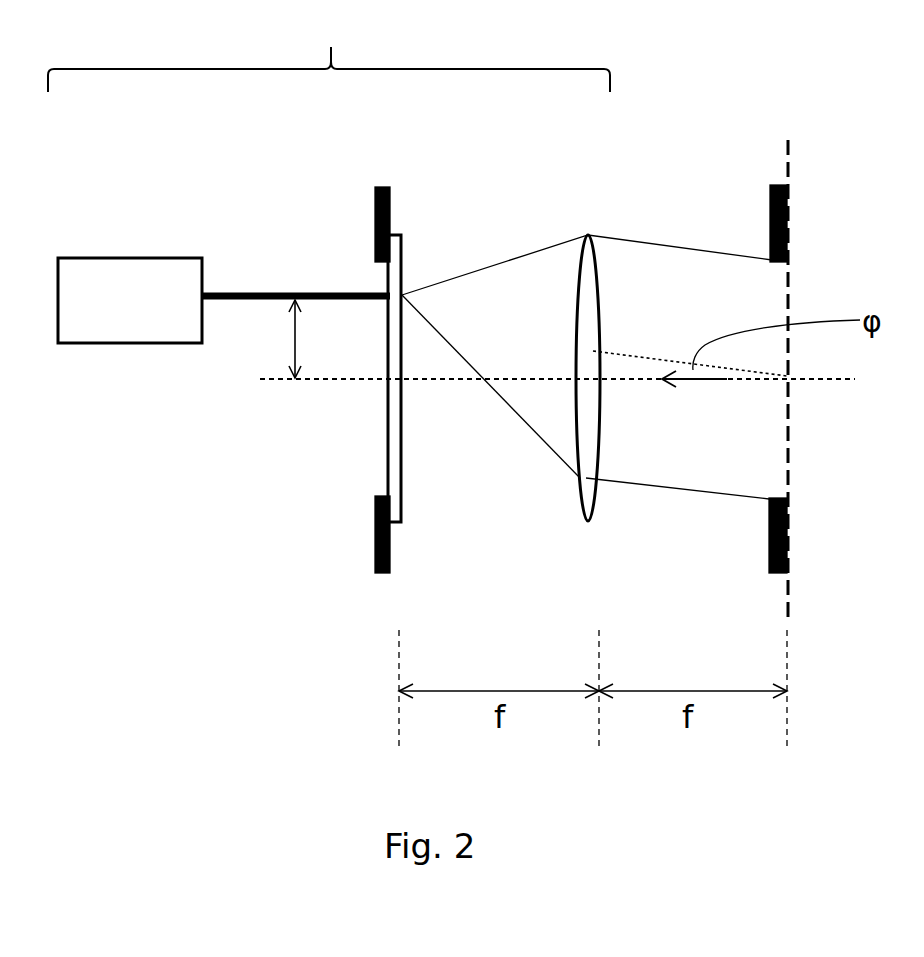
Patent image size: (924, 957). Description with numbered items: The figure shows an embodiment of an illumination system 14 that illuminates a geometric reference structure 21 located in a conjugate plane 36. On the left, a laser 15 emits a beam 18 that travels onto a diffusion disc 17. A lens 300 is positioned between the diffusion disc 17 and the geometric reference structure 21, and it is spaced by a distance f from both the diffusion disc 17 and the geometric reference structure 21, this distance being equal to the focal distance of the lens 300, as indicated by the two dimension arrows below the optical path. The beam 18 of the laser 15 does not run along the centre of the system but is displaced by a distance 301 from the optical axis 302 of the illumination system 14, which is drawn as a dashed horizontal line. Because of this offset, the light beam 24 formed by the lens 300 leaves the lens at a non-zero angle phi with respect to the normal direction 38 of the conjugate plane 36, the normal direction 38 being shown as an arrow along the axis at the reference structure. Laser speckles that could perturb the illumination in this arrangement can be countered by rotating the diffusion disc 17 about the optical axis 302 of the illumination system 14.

The illumination system 14 is at (329, 52).
The laser 15 is at (150, 318).
The diffusion disc 17 is at (401, 483).
The beam 18 is at (247, 293).
The geometric reference structure 21 is at (788, 203).
The light beam 24 is at (658, 280).
The conjugate plane 36 is at (788, 475).
The normal direction 38 is at (728, 380).
The lens 300 is at (588, 235).
The distance 301 is at (293, 340).
The optical axis 302 is at (338, 378).